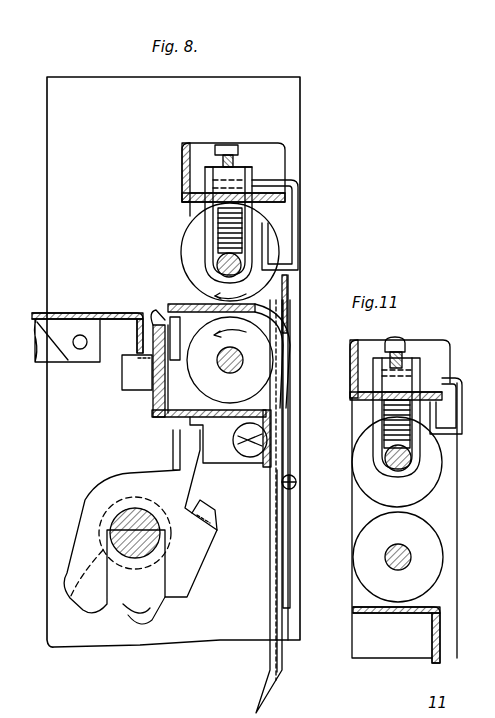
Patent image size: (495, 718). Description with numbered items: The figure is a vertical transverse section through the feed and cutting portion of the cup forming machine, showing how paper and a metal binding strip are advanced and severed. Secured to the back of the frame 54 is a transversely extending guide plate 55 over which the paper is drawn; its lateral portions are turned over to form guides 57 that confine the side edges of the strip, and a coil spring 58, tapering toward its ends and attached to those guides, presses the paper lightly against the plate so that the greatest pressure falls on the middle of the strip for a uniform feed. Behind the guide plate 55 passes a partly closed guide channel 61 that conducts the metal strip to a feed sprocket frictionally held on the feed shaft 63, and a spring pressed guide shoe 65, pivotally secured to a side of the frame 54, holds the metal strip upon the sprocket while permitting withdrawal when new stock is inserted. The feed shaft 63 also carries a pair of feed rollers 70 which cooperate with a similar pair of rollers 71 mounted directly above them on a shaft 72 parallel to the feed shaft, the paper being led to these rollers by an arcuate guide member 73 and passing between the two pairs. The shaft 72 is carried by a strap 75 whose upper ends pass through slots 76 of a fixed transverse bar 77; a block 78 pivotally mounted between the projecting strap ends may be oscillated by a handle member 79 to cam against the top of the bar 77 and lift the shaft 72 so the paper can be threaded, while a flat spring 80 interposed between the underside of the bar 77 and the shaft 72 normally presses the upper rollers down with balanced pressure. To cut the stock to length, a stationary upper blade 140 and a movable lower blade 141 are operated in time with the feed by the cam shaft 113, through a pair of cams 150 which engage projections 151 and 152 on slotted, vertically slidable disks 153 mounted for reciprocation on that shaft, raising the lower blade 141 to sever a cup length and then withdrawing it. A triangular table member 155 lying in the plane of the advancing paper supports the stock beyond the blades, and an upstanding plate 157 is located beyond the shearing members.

In FIG. 8, the frame 54 is at (206, 640).
In FIG. 8, the guide plate 55 is at (272, 440).
In FIG. 8, the guides 57 is at (290, 556).
In FIG. 8, the coil spring 58 is at (297, 483).
In FIG. 8, the guide channel 61 is at (273, 680).
In FIG. 8, the feed shaft 63 is at (245, 362).
In FIG. 11, the feed shaft 63 is at (412, 556).
In FIG. 8, the guide shoe 65 is at (290, 300).
In FIG. 8, the feed rollers 70 is at (240, 418).
In FIG. 11, the feed rollers 70 is at (433, 569).
In FIG. 8, the rollers 71 is at (180, 258).
In FIG. 11, the rollers 71 is at (432, 461).
In FIG. 8, the shaft 72 is at (240, 262).
In FIG. 11, the shaft 72 is at (405, 470).
In FIG. 8, the arcuate guide member 73 is at (287, 328).
In FIG. 8, the strap 75 is at (243, 235).
In FIG. 11, the strap 75 is at (415, 452).
In FIG. 8, the slots 76 is at (185, 205).
In FIG. 11, the slots 76 is at (420, 388).
In FIG. 8, the bar 77 is at (265, 199).
In FIG. 11, the bar 77 is at (380, 388).
In FIG. 8, the block 78 is at (236, 170).
In FIG. 11, the block 78 is at (405, 372).
In FIG. 8, the handle member 79 is at (287, 260).
In FIG. 11, the handle member 79 is at (462, 392).
In FIG. 8, the flat spring 80 is at (207, 228).
In FIG. 11, the flat spring 80 is at (395, 432).
In FIG. 8, the cam shaft 113 is at (158, 546).
In FIG. 8, the upper blade 140 is at (168, 265).
In FIG. 8, the lower blade 141 is at (152, 383).
In FIG. 8, the cams 150 is at (138, 585).
In FIG. 8, the projection 151 is at (212, 520).
In FIG. 8, the projection 152 is at (80, 600).
In FIG. 8, the slidable disks 153 is at (123, 480).
In FIG. 8, the table member 155 is at (95, 311).
In FIG. 8, the upstanding plate 157 is at (148, 330).